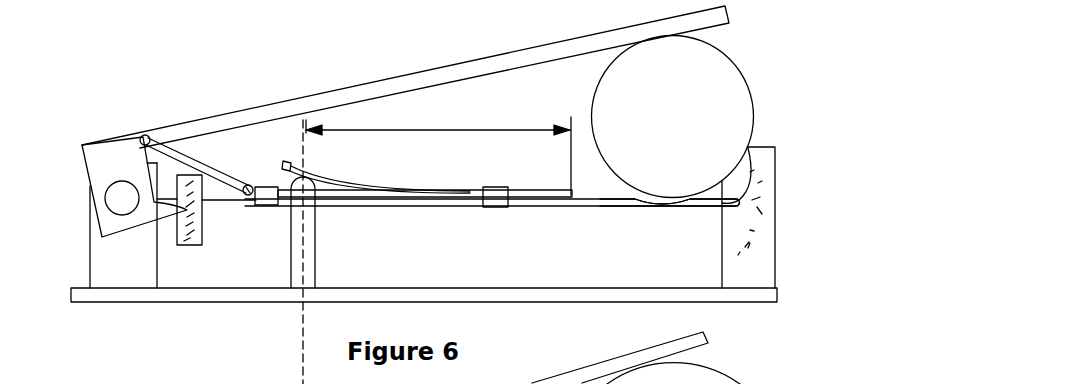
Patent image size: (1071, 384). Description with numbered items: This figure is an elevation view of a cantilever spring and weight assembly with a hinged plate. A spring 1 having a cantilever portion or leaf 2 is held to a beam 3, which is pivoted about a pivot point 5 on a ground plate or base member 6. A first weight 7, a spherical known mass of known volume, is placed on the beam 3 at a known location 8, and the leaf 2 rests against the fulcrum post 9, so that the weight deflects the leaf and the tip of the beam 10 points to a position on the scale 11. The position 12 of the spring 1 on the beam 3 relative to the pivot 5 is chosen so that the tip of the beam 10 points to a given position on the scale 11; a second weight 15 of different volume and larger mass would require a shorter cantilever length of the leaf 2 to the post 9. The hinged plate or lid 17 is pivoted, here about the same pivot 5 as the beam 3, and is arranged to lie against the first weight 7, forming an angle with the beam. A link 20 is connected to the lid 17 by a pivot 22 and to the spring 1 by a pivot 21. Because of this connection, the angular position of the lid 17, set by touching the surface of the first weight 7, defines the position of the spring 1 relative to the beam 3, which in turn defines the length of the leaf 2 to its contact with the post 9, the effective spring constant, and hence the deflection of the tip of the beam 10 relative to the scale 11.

The spring 1 is at (468, 188).
The cantilever portion (leaf) 2 is at (338, 178).
The beam 3 is at (598, 202).
The pivot point 5 is at (119, 202).
The ground plate (base member) 6 is at (123, 295).
The first weight 7 is at (688, 107).
The known location 8 is at (673, 207).
The post (fulcrum post) 9 is at (297, 255).
The tip of the beam 10 is at (747, 190).
The scale 11 is at (765, 210).
The position of the spring 12 is at (290, 165).
The second weight 15 is at (783, 383).
The hinged plate (lid) 17 is at (428, 80).
The link 20 is at (205, 167).
The pivot 21 is at (245, 194).
The pivot 22 is at (140, 136).